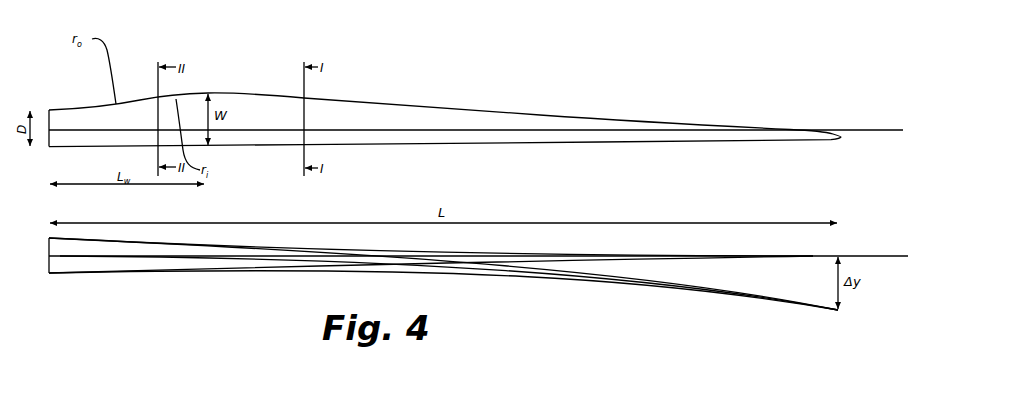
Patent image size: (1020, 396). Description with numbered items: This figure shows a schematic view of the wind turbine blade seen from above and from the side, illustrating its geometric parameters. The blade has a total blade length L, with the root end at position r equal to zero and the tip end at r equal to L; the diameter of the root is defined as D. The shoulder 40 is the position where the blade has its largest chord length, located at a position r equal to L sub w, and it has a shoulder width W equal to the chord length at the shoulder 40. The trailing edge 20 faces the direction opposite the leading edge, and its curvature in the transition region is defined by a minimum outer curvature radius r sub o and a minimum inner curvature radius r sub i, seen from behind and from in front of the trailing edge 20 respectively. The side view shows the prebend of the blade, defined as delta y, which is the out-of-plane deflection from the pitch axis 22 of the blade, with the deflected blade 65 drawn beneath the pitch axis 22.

The trailing edge 20 is at (330, 261).
The pitch axis 22 is at (361, 128).
The shoulder 40 is at (208, 96).
The deflected blade 65 is at (198, 262).